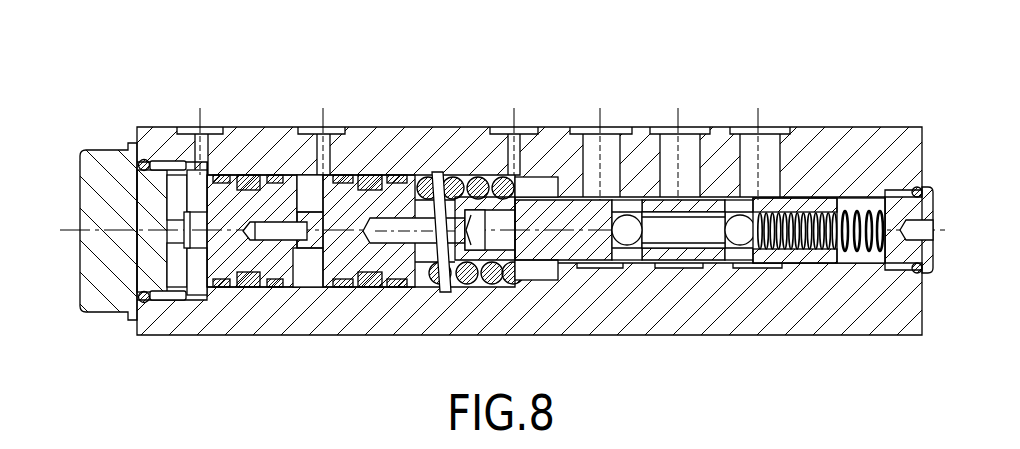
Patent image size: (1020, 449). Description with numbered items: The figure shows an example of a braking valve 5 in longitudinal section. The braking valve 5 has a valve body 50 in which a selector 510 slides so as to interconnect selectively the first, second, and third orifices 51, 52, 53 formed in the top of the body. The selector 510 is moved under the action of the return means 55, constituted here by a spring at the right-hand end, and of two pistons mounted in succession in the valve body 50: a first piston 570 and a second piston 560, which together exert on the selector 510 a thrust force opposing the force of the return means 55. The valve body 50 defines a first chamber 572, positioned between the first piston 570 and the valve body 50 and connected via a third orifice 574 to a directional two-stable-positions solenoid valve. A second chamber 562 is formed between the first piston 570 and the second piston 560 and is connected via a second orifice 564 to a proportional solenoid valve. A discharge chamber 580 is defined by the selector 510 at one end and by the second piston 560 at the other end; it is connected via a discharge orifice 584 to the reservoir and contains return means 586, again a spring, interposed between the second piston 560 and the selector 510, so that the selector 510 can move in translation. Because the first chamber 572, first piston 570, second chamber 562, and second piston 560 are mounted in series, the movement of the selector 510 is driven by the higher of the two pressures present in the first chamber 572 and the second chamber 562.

The braking valve 5 is at (847, 82).
The valve body 50 is at (876, 323).
The first orifice 51 is at (686, 147).
The second orifice 52 is at (608, 147).
The third orifice 53 is at (766, 147).
The return means 55 is at (845, 212).
The selector 510 is at (562, 237).
The second piston 560 is at (357, 250).
The second chamber 562 is at (312, 263).
The second orifice 564 is at (322, 142).
The first piston 570 is at (222, 287).
The first chamber 572 is at (177, 197).
The third orifice 574 is at (202, 142).
The discharge chamber 580 is at (552, 197).
The discharge orifice 584 is at (500, 198).
The return means 586 is at (450, 196).